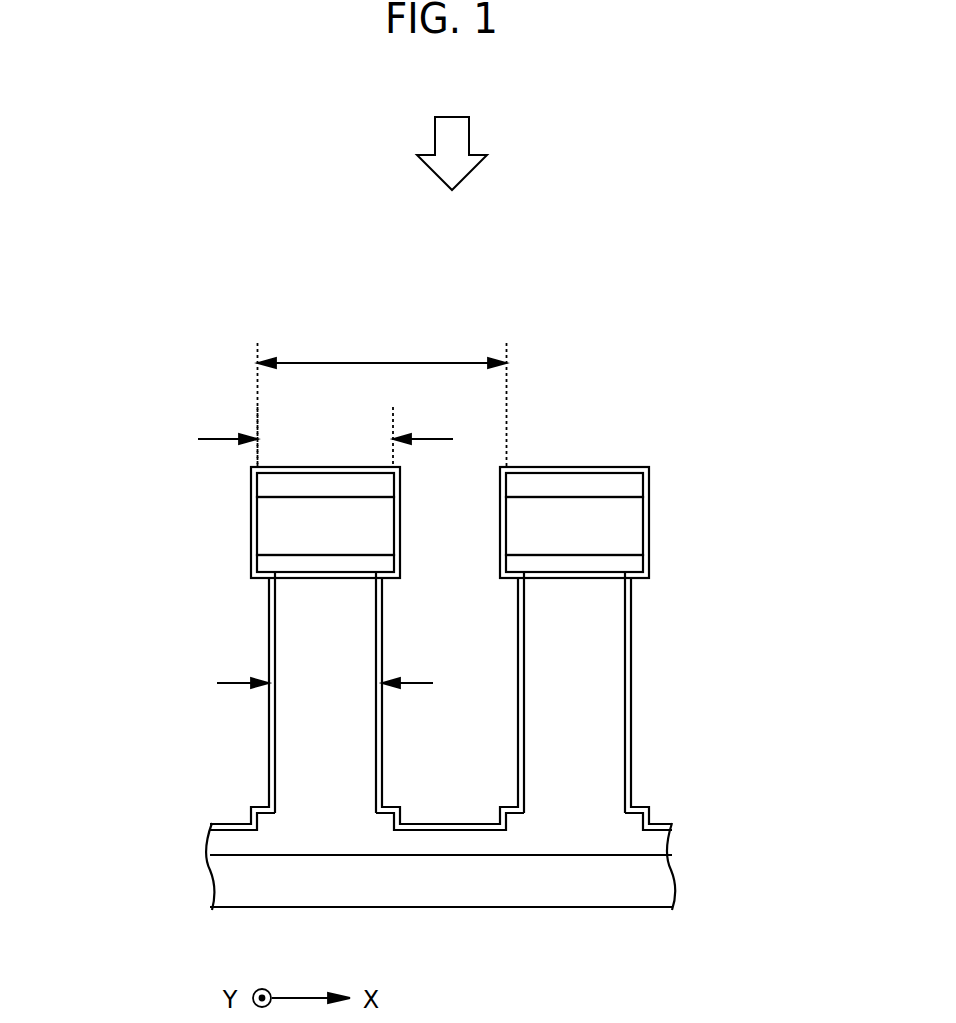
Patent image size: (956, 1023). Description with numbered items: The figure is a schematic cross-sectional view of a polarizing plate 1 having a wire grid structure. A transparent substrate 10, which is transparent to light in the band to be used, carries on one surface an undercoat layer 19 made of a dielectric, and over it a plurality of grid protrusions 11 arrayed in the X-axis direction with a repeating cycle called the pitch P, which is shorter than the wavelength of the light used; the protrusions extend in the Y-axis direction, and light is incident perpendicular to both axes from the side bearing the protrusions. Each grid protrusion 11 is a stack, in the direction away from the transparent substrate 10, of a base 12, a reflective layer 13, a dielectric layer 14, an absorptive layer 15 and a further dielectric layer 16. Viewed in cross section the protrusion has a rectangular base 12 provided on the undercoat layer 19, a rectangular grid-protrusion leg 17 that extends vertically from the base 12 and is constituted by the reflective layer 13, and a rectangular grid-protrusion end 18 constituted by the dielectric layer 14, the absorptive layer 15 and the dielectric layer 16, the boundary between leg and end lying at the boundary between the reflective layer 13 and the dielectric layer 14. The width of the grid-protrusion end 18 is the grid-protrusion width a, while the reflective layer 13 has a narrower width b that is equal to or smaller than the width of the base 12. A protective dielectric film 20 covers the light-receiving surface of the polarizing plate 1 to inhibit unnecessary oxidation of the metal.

The polarizing plate 1 is at (580, 278).
The transparent substrate 10 is at (643, 885).
The grid protrusions 11 is at (410, 297).
The base 12 is at (628, 826).
The reflective layer 13 is at (615, 690).
The dielectric layer 14 is at (637, 565).
The absorptive layer 15 is at (637, 524).
The dielectric layer 16 is at (637, 482).
The grid-protrusion leg 17 is at (574, 692).
The grid-protrusion end 18 is at (742, 472).
The undercoat layer 19 is at (640, 843).
The protective dielectric film 20 is at (607, 472).